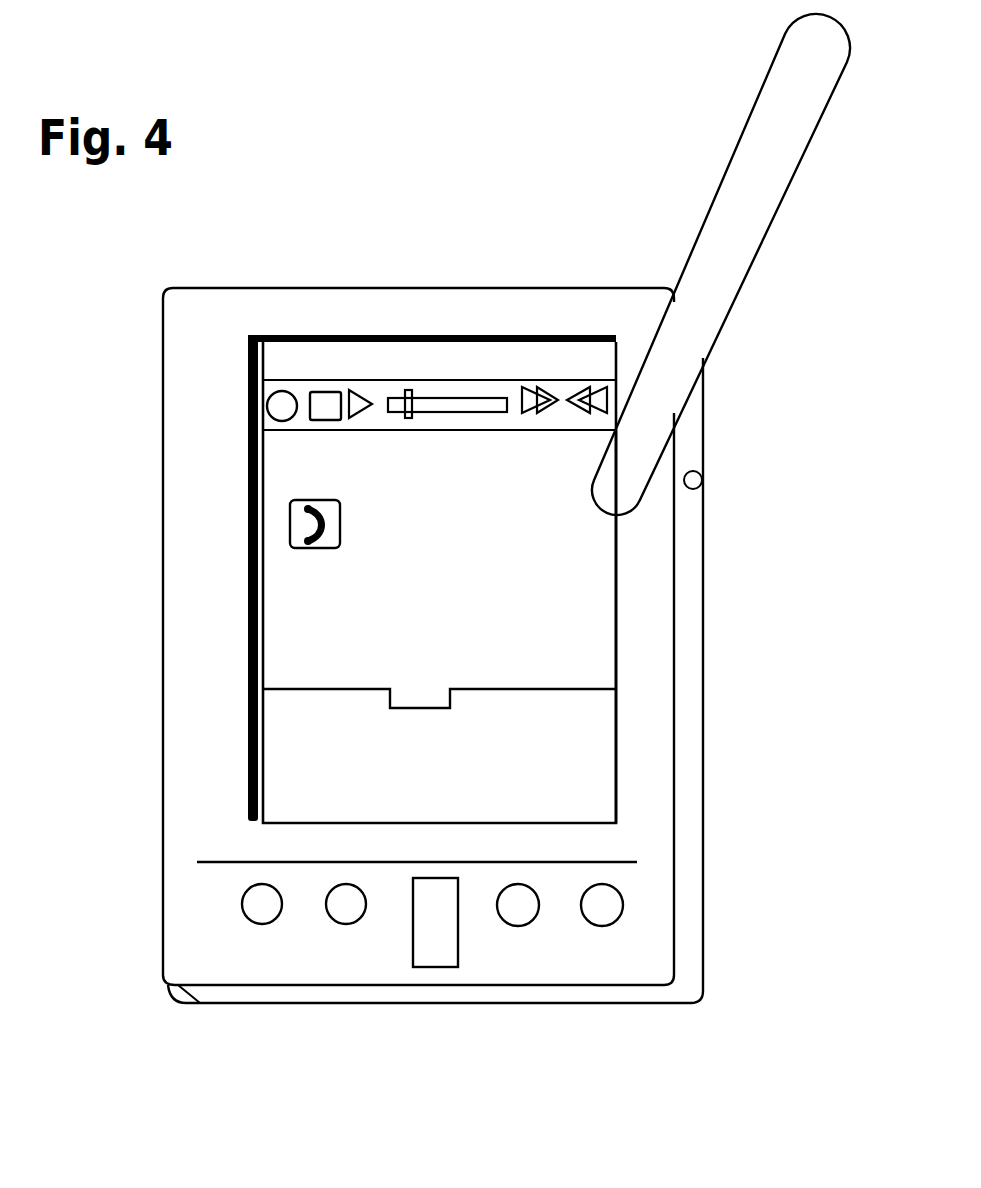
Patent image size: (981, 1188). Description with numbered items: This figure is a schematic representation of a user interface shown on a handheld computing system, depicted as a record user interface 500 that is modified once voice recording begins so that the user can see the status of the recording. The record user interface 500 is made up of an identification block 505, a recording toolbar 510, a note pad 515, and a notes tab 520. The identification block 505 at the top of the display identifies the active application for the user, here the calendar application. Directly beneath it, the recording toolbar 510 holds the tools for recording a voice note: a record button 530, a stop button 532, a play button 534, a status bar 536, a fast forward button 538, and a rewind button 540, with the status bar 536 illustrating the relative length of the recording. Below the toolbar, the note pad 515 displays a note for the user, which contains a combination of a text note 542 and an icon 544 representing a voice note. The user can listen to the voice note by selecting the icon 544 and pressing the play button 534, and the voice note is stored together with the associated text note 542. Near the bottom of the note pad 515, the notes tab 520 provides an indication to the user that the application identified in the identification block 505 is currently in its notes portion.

The record user interface 500 is at (627, 737).
The identification block 505 is at (585, 358).
The recording toolbar 510 is at (268, 432).
The note pad 515 is at (617, 583).
The notes tab 520 is at (450, 698).
The record button 530 is at (278, 389).
The stop button 532 is at (330, 408).
The play button 534 is at (350, 388).
The status bar 536 is at (427, 412).
The fast forward button 538 is at (532, 396).
The rewind button 540 is at (593, 413).
The text note 542 is at (407, 488).
The icon 544 is at (330, 543).